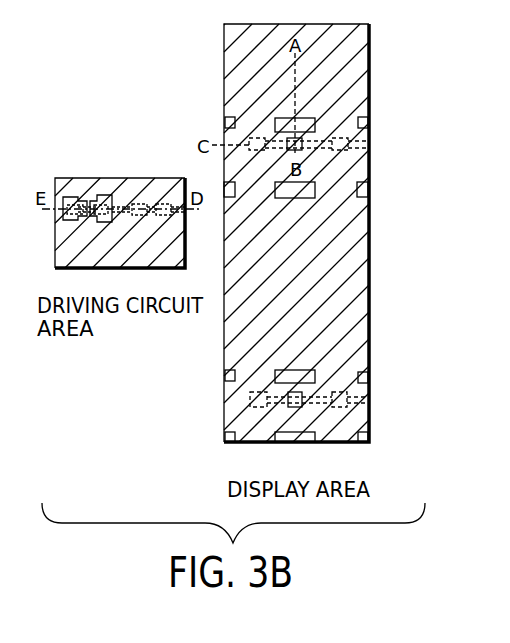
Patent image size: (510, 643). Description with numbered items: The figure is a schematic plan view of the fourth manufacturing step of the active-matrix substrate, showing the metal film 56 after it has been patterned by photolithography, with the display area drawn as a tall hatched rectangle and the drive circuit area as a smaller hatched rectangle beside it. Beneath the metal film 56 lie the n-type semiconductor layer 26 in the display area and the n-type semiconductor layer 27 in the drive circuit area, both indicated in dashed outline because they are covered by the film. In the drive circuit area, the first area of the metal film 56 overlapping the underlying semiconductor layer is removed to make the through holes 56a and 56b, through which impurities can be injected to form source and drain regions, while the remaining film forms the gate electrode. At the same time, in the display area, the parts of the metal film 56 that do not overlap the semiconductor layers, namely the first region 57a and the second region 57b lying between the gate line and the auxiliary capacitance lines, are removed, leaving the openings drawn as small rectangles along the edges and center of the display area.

The metal film 56 is at (363, 279).
The through hole 56a is at (100, 196).
The through hole 56b is at (68, 197).
The first region 57a is at (225, 120).
The second region 57b is at (230, 197).
The n-type semiconductor layer 26 is at (262, 137).
The n-type semiconductor layer 27 is at (149, 203).